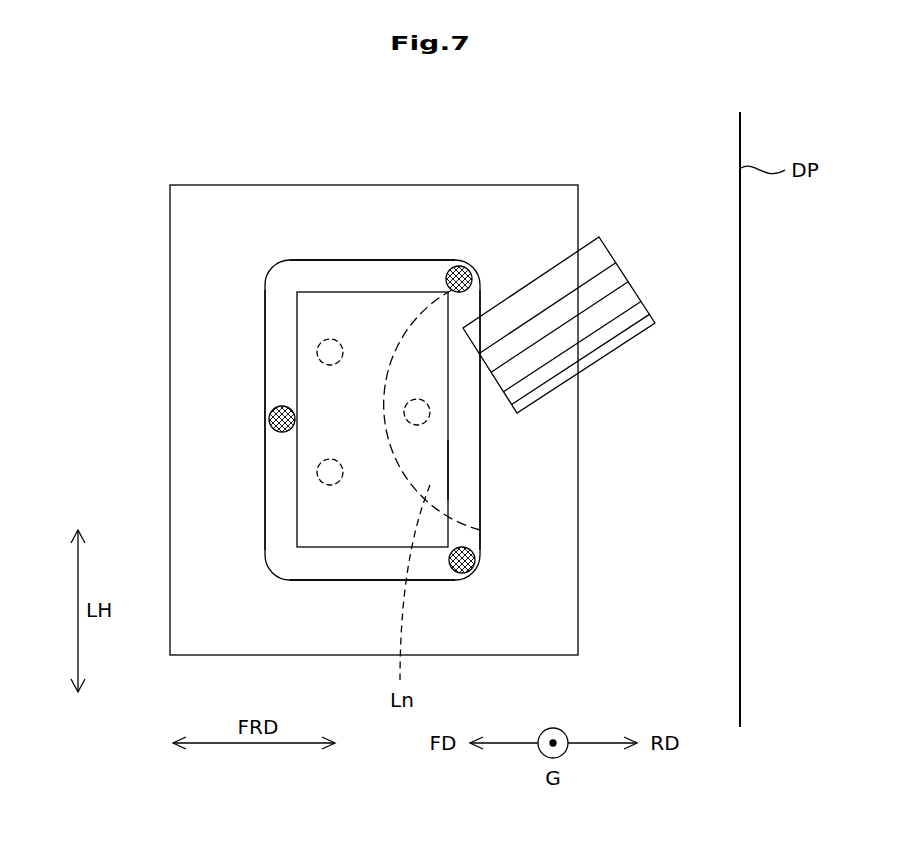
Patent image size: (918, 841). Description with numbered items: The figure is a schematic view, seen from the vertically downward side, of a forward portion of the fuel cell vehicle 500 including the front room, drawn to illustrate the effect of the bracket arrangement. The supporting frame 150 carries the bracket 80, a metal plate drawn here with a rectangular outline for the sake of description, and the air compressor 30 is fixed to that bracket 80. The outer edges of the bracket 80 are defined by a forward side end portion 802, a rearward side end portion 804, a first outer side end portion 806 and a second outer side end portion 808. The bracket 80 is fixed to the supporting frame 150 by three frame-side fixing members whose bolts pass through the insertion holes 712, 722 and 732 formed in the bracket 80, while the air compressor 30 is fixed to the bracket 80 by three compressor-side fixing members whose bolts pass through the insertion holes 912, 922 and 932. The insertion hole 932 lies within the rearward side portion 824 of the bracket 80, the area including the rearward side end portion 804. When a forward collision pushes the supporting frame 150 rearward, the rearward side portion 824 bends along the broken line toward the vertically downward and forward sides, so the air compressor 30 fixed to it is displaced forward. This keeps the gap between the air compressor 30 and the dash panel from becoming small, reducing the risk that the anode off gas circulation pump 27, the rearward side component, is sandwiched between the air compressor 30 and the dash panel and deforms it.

The fuel cell vehicle 500 is at (137, 120).
The supporting frame 150 is at (240, 185).
The bracket 80 is at (309, 256).
The forward side end portion 802 is at (265, 480).
The rearward side end portion 804 is at (481, 427).
The first outer side end portion 806 is at (350, 582).
The second outer side end portion 808 is at (353, 258).
The air compressor 30 is at (392, 292).
The rearward side portion 824 is at (458, 474).
The insertion hole 732 is at (461, 266).
The insertion hole 712 is at (271, 411).
The insertion hole 722 is at (476, 554).
The insertion hole 912 is at (319, 344).
The insertion hole 922 is at (318, 470).
The insertion hole 932 is at (427, 423).
The anode off gas circulation pump 27 is at (610, 260).